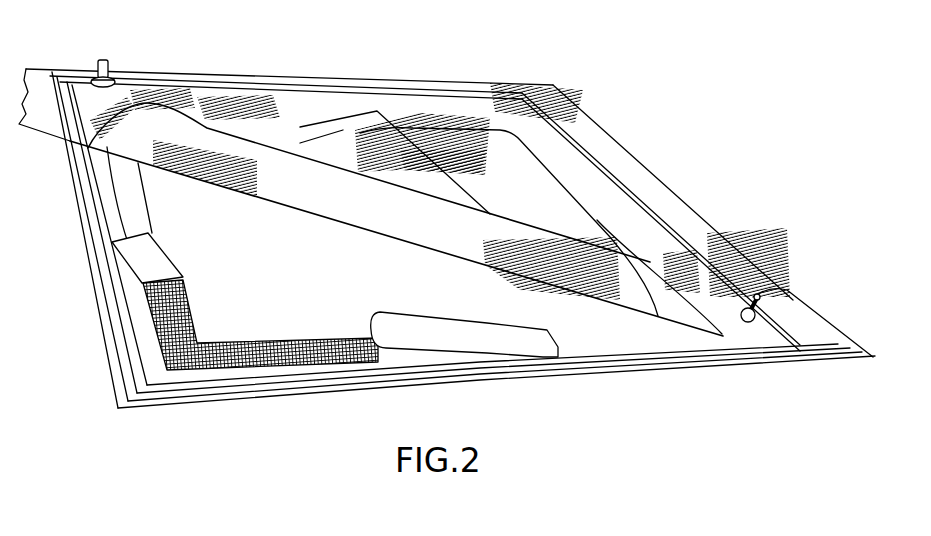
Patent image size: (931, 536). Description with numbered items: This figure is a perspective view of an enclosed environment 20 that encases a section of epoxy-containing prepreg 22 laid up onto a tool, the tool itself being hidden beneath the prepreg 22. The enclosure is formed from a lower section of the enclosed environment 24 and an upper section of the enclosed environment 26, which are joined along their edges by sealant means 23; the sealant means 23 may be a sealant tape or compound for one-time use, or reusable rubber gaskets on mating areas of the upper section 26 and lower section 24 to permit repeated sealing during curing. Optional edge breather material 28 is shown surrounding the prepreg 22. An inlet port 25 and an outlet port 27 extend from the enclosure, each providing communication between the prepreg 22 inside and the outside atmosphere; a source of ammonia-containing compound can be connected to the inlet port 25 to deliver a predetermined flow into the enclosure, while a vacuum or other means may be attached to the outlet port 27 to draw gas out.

The enclosed environment 20 is at (474, 30).
The prepreg 22 is at (220, 338).
The sealant means 23 is at (88, 213).
The lower section of the enclosed environment 24 is at (118, 406).
The inlet port 25 is at (100, 62).
The upper section of the enclosed environment 26 is at (147, 118).
The outlet port 27 is at (820, 299).
The edge breather material 28 is at (140, 252).